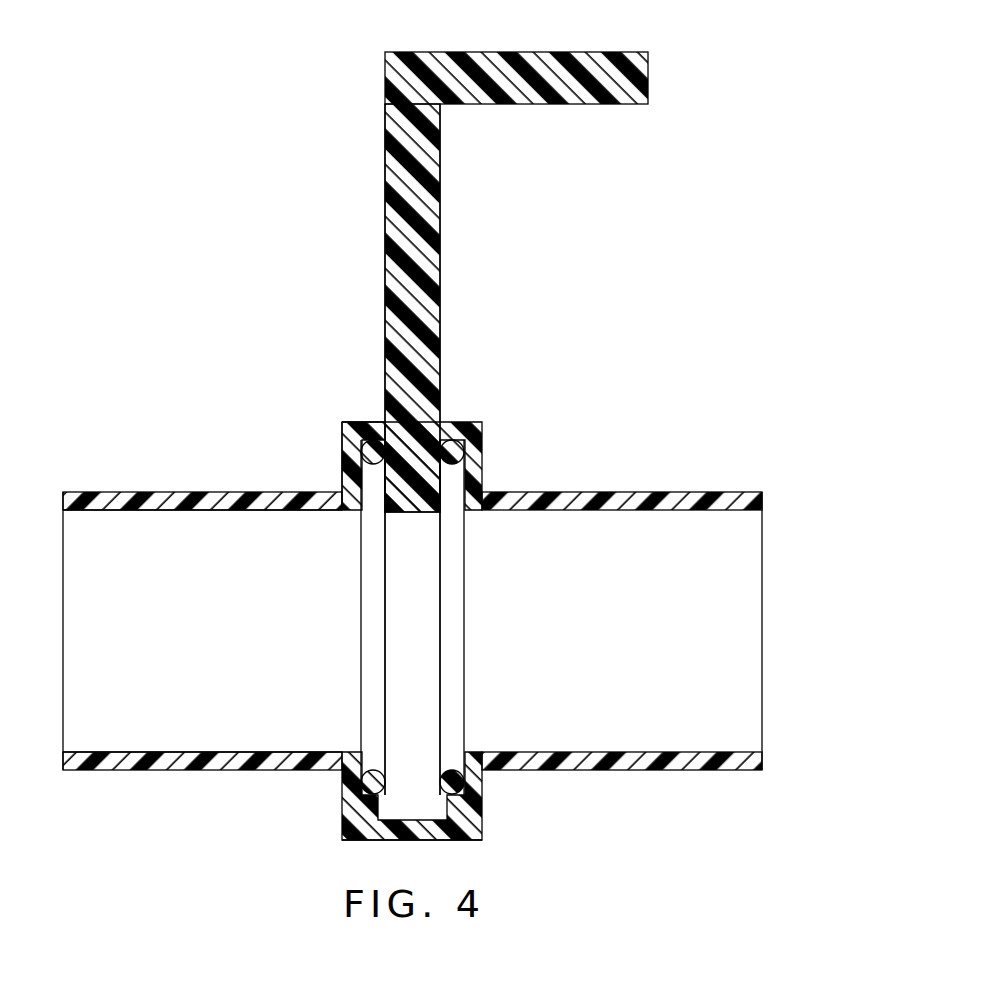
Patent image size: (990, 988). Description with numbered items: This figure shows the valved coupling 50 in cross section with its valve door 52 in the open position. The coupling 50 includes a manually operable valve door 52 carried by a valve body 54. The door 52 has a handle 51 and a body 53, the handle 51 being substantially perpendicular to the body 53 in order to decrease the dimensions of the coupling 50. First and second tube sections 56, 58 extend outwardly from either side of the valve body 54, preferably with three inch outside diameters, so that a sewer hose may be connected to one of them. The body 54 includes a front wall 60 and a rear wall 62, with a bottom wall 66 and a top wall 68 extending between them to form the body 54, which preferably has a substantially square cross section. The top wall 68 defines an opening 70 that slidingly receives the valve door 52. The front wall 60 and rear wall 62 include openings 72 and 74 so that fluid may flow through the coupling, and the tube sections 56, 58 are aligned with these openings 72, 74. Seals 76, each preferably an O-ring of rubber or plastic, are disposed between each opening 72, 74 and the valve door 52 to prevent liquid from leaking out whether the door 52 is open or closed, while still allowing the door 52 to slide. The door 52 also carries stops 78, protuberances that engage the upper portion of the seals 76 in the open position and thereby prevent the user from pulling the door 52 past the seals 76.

The valved coupling 50 is at (775, 237).
The handle 51 is at (613, 52).
The valve door 52 is at (441, 228).
The body 53 is at (430, 272).
The valve body 54 is at (389, 818).
The first tube section 56 is at (643, 500).
The second tube section 58 is at (118, 503).
The front wall 60 is at (405, 410).
The rear wall 62 is at (340, 438).
The bottom wall 66 is at (462, 832).
The top wall 68 is at (357, 422).
The opening 70 is at (383, 430).
The opening 72 is at (470, 612).
The opening 74 is at (332, 640).
The seal 76 is at (372, 572).
The stop 78 is at (373, 472).